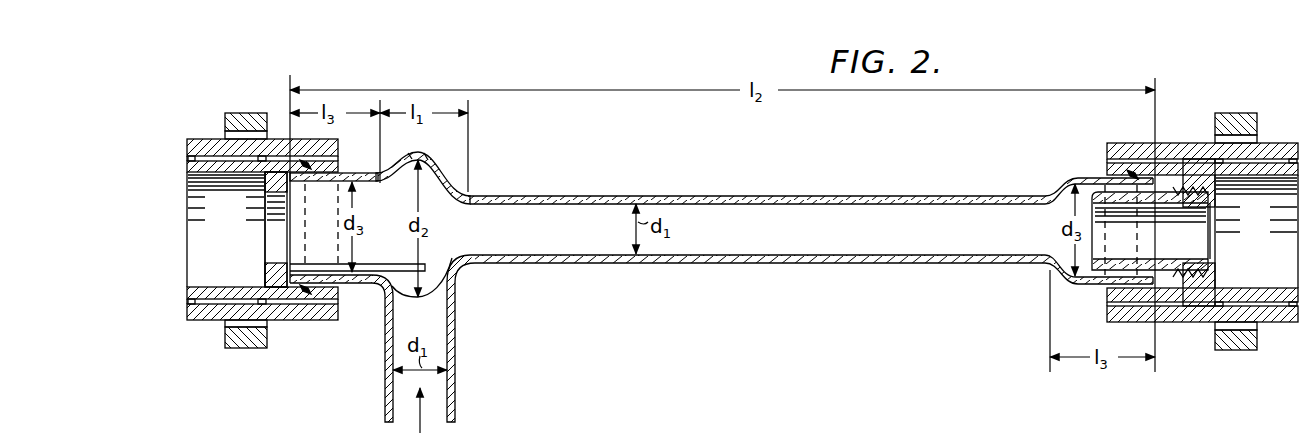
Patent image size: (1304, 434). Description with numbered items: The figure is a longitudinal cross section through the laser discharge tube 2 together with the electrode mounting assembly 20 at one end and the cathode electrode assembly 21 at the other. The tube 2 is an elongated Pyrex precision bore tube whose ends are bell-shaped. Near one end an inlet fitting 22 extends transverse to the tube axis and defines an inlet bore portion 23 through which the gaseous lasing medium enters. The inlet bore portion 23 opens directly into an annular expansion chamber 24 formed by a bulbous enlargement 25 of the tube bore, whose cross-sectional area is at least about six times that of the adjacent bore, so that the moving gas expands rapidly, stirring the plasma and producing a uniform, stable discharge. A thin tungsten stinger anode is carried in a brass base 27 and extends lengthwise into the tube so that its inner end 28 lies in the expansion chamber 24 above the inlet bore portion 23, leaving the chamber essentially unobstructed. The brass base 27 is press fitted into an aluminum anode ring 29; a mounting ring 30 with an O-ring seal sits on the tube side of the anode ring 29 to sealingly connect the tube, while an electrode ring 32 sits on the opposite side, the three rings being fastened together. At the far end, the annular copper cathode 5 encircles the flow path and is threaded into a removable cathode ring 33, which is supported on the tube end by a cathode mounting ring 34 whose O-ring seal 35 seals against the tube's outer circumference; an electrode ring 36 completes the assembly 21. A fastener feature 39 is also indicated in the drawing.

The laser discharge tube 2 is at (590, 196).
The cathode 5 is at (1151, 230).
The electrode mounting assembly 20 is at (224, 86).
The cathode electrode assembly 21 is at (1137, 121).
The inlet fitting 22 is at (455, 365).
The inlet bore portion 23 is at (432, 325).
The annular expansion chamber 24 is at (440, 178).
The bulbous enlargement 25 is at (420, 157).
The brass base 27 is at (263, 185).
The inner end 28 is at (434, 263).
The anode ring 29 is at (280, 322).
The mounting ring 30 is at (340, 162).
The electrode ring 32 is at (205, 148).
The cathode ring 33 is at (1195, 322).
The cathode mounting ring 34 is at (1107, 310).
The O-ring seal 35 is at (1130, 170).
The electrode ring 36 is at (1257, 122).
The bolt 39 is at (303, 293).